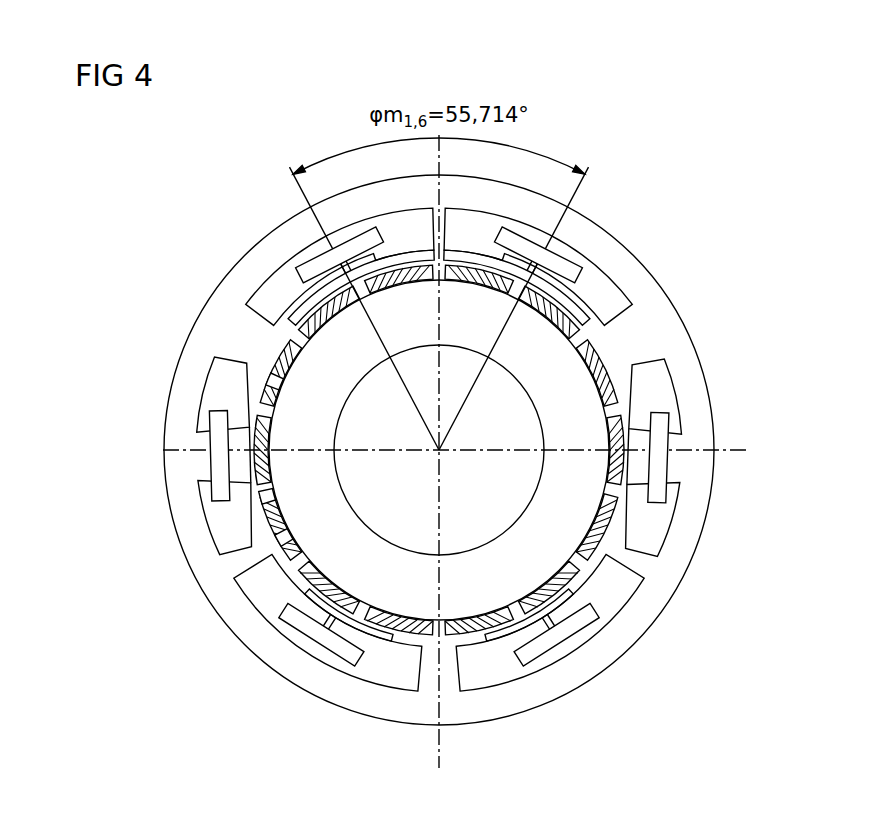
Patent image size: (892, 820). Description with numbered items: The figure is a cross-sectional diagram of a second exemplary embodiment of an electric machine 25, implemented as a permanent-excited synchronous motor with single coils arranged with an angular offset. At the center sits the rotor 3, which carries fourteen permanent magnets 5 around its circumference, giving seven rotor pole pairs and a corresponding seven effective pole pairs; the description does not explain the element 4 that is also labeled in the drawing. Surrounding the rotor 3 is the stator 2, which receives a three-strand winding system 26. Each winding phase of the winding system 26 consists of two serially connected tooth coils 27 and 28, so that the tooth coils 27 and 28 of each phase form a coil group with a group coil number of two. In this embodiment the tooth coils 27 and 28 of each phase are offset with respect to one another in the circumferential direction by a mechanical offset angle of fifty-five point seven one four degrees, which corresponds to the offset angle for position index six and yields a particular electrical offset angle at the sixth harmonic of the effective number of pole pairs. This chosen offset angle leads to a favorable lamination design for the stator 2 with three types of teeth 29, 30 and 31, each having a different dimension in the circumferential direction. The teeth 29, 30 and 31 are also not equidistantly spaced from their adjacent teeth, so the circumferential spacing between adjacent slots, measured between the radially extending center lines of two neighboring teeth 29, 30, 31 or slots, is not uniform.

The stator 2 is at (338, 690).
The rotor 3 is at (260, 394).
The rotor 4 is at (436, 453).
The permanent magnets 5 is at (261, 376).
The electric machine 25 is at (694, 158).
The winding system 26 is at (232, 257).
The tooth coil 27 is at (322, 262).
The tooth coil 28 is at (556, 258).
The tooth 29 is at (241, 334).
The tooth 30 is at (211, 444).
The tooth 31 is at (241, 566).